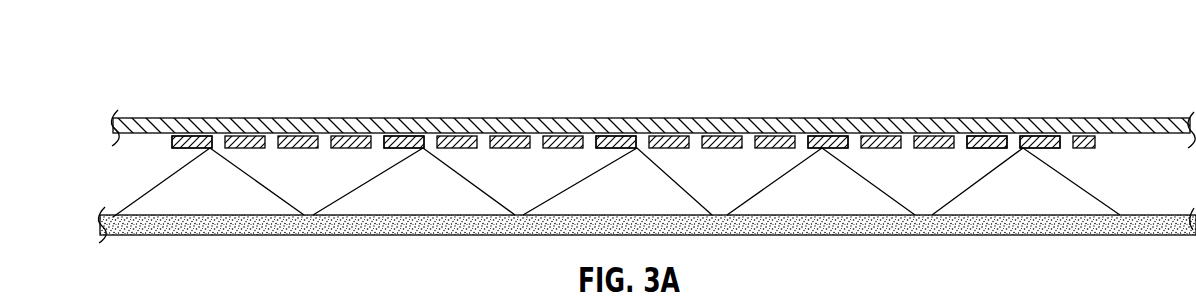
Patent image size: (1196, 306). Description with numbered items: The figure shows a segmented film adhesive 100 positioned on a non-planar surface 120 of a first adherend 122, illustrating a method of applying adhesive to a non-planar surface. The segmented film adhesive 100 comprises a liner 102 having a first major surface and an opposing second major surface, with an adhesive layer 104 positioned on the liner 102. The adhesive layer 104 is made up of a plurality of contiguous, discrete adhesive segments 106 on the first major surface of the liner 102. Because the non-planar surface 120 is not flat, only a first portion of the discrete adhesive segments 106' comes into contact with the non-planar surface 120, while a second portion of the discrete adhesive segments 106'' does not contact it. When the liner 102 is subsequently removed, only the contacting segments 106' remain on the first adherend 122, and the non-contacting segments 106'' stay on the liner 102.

The segmented film adhesive 100 is at (1082, 58).
The liner 102 is at (1113, 118).
The adhesive layer 104 is at (1099, 143).
The discrete adhesive segments 106 is at (997, 175).
The first portion of the discrete adhesive segments 106' is at (622, 144).
The second portion of the discrete adhesive segments 106'' is at (911, 176).
The non-planar surface 120 is at (158, 177).
The first adherend 122 is at (158, 240).